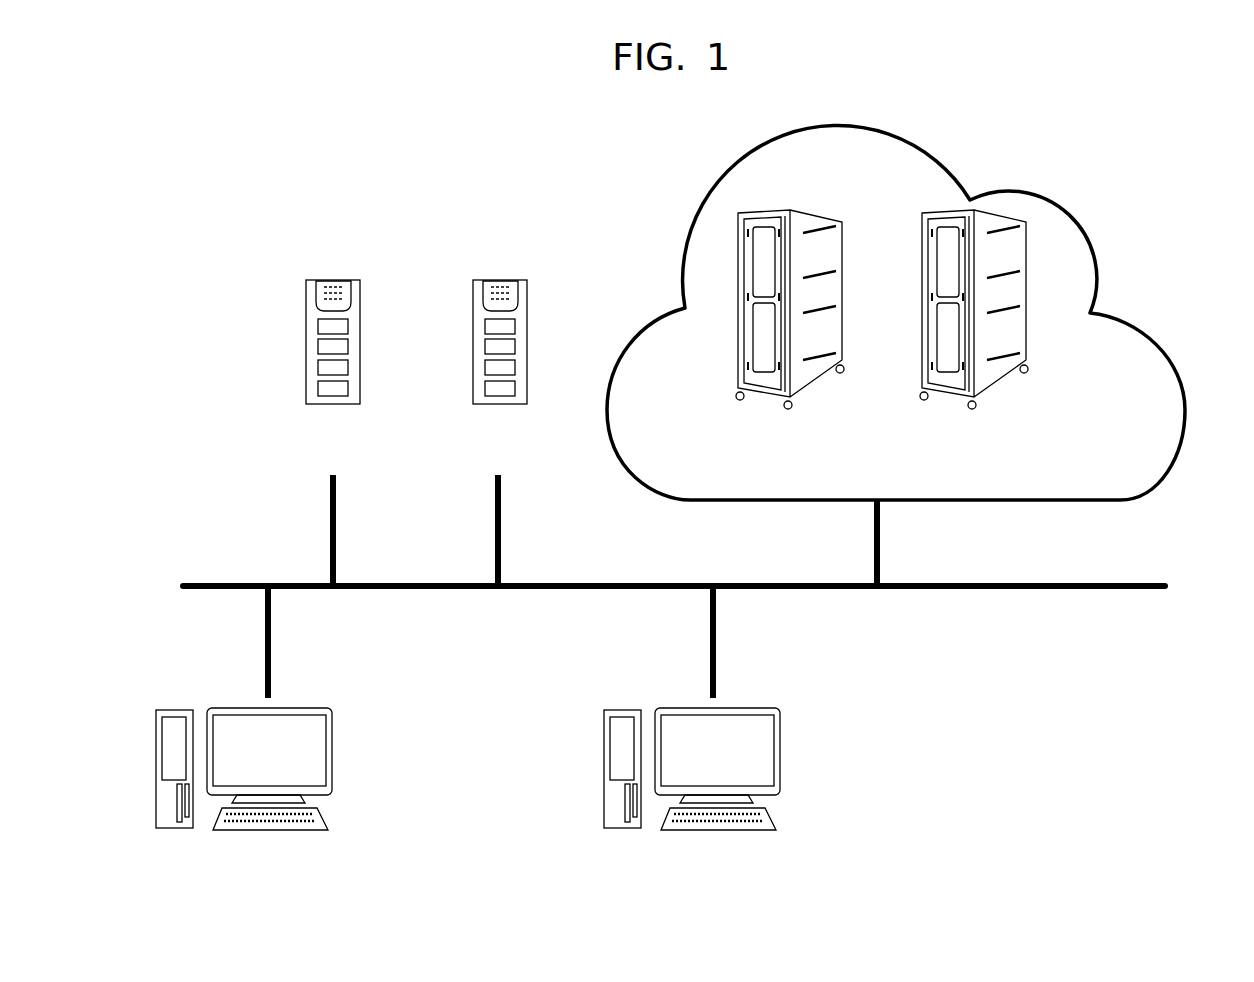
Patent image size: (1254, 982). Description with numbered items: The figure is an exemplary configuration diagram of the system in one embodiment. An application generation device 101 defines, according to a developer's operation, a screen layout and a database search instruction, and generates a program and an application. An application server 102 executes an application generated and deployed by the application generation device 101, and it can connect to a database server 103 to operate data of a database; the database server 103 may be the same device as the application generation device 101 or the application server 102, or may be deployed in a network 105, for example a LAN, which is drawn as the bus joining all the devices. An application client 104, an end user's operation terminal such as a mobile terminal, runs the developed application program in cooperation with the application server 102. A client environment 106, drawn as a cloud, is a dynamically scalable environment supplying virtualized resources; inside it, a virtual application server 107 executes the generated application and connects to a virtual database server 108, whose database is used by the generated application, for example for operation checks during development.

The application generation device 101 is at (303, 711).
The application server 102 is at (336, 283).
The database server 103 is at (511, 283).
The application client 104 is at (751, 711).
The network 105 is at (1116, 585).
The client environment 106 is at (904, 137).
The virtual application server 107 is at (816, 217).
The virtual database server 108 is at (1010, 219).